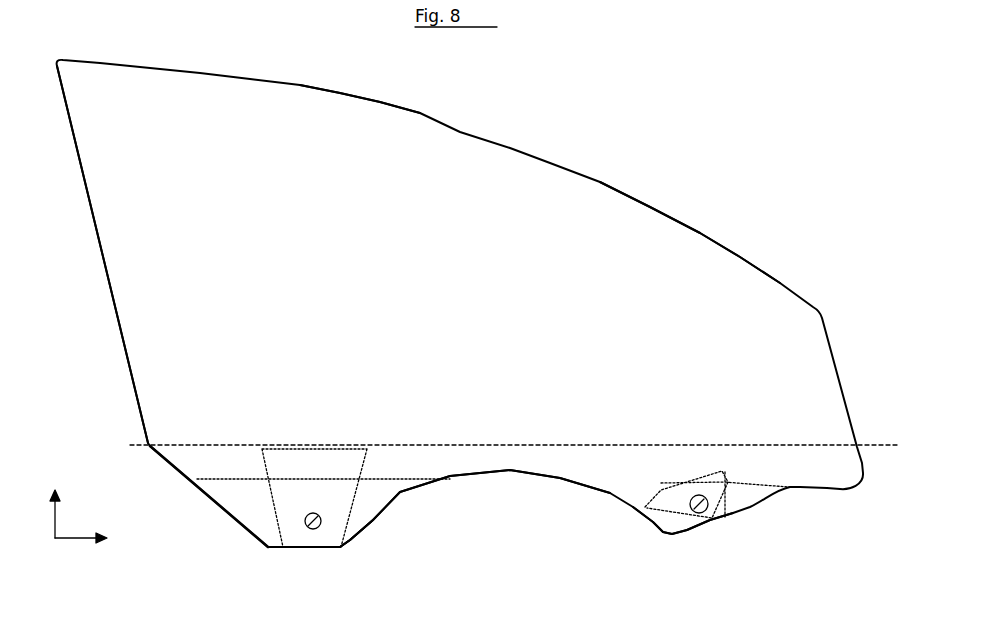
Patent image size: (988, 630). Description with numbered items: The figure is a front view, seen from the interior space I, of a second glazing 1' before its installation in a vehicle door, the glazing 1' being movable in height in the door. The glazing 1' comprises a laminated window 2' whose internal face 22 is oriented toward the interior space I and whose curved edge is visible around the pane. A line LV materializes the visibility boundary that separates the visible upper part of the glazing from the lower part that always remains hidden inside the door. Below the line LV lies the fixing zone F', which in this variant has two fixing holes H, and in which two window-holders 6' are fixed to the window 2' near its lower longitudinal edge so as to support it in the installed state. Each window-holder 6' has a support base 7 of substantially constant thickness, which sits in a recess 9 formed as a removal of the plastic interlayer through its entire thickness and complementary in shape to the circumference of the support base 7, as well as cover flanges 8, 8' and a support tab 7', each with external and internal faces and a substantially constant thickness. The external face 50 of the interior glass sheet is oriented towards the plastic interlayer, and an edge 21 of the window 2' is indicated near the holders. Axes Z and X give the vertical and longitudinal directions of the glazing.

The glazing 1' is at (460, 301).
The window 2' is at (652, 183).
The internal face 22 is at (290, 176).
The interior space I is at (360, 148).
The visibility boundary line LV is at (840, 447).
The support tab 7' is at (242, 498).
The cover flange 8 is at (209, 506).
The fixing hole H is at (307, 526).
The window-holder 6' is at (519, 544).
The support base 7 is at (308, 575).
The recess 9 is at (353, 498).
The cover flange 8' is at (420, 532).
The external face of interior glass sheet 50 is at (418, 480).
The arc edge 21 is at (520, 473).
The fixing zone F' is at (840, 552).
The z axis Z is at (46, 502).
The x axis X is at (81, 549).